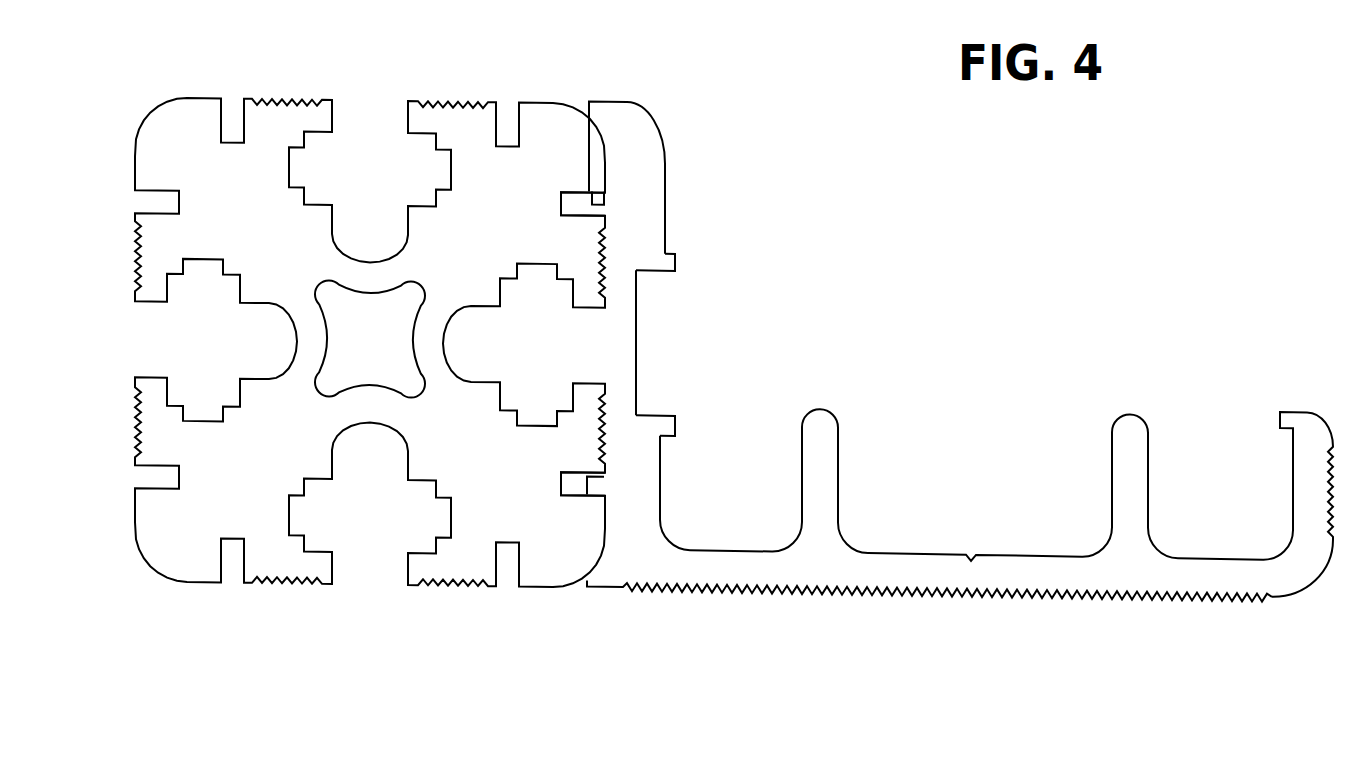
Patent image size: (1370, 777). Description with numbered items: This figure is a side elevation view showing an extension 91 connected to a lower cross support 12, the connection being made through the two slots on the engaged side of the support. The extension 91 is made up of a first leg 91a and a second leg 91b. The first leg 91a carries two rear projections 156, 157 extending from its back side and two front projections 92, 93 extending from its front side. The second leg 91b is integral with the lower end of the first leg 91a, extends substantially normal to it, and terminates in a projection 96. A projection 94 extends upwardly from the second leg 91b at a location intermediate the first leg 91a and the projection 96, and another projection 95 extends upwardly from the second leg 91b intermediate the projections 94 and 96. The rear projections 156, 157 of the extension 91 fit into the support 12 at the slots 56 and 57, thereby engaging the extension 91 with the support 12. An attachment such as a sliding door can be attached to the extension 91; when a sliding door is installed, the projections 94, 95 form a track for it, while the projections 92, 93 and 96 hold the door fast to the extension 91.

The lower cross support 12 is at (331, 340).
The slot 56 is at (562, 195).
The slot 57 is at (560, 492).
The rear projection 156 is at (598, 198).
The rear projection 157 is at (595, 487).
The extension 91 is at (938, 383).
The first leg 91a is at (637, 146).
The second leg 91b is at (997, 568).
The front projection 92 is at (675, 253).
The front projection 93 is at (661, 414).
The projection 94 is at (834, 407).
The projection 95 is at (1142, 414).
The projection 96 is at (1320, 412).